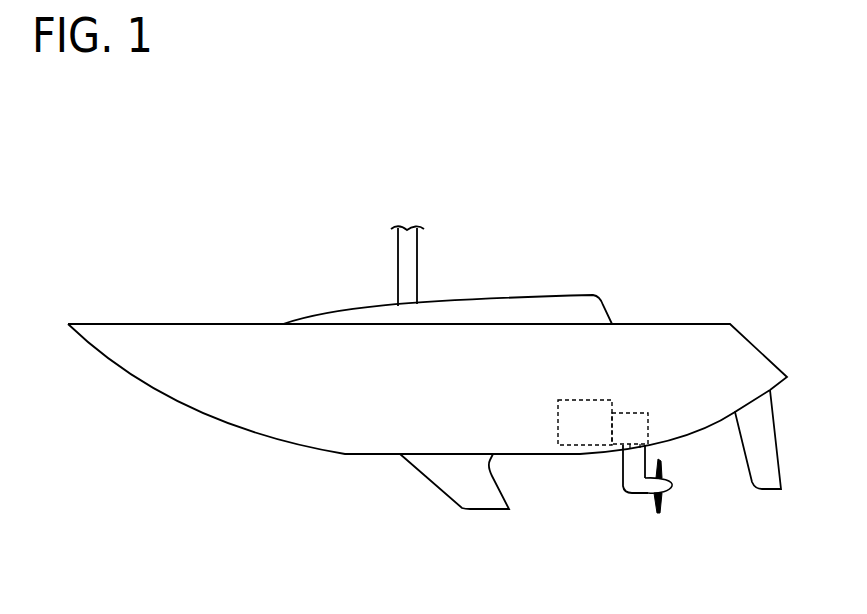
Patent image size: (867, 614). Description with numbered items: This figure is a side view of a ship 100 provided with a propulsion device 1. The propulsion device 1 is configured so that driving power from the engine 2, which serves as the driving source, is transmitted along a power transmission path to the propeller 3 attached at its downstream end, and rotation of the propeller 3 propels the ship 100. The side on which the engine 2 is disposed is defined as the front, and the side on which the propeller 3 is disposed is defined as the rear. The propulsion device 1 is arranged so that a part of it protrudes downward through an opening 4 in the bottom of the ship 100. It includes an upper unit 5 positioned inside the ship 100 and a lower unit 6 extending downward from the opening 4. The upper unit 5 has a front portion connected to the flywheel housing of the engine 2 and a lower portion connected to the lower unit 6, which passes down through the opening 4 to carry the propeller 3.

The ship 100 is at (719, 218).
The propulsion device 1 is at (583, 538).
The engine 2 is at (597, 398).
The propeller 3 is at (673, 493).
The opening 4 is at (650, 424).
The upper unit 5 is at (657, 410).
The lower unit 6 is at (621, 491).